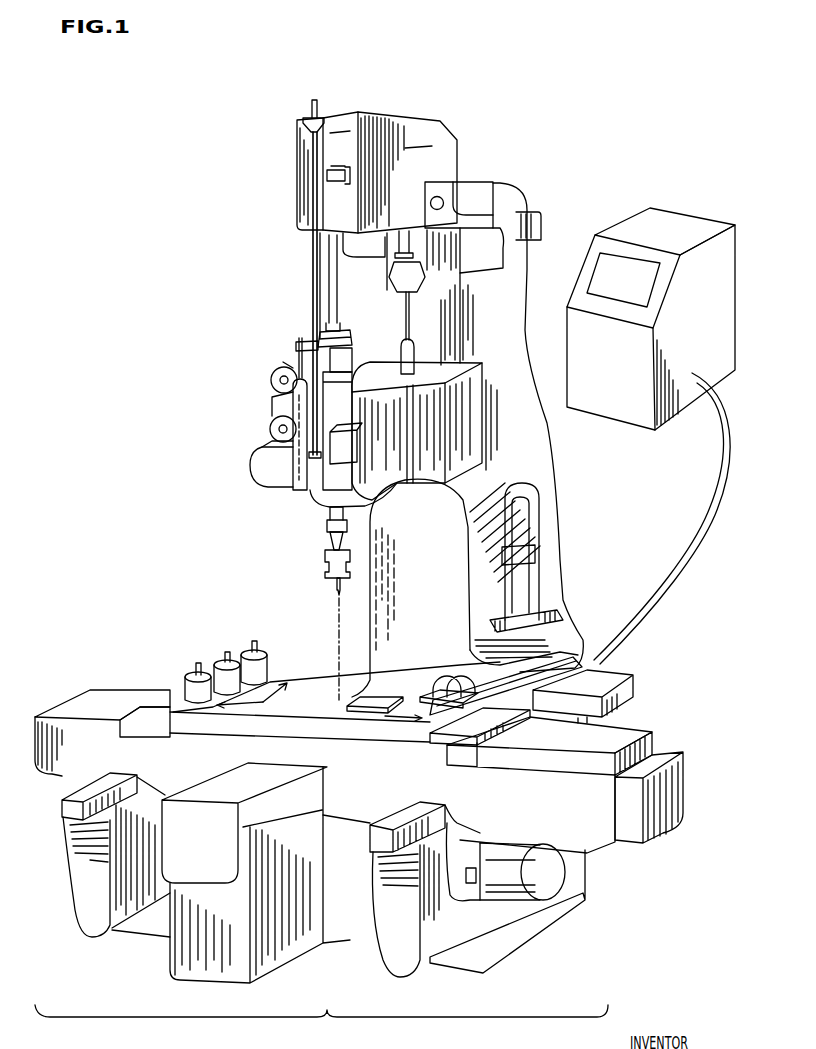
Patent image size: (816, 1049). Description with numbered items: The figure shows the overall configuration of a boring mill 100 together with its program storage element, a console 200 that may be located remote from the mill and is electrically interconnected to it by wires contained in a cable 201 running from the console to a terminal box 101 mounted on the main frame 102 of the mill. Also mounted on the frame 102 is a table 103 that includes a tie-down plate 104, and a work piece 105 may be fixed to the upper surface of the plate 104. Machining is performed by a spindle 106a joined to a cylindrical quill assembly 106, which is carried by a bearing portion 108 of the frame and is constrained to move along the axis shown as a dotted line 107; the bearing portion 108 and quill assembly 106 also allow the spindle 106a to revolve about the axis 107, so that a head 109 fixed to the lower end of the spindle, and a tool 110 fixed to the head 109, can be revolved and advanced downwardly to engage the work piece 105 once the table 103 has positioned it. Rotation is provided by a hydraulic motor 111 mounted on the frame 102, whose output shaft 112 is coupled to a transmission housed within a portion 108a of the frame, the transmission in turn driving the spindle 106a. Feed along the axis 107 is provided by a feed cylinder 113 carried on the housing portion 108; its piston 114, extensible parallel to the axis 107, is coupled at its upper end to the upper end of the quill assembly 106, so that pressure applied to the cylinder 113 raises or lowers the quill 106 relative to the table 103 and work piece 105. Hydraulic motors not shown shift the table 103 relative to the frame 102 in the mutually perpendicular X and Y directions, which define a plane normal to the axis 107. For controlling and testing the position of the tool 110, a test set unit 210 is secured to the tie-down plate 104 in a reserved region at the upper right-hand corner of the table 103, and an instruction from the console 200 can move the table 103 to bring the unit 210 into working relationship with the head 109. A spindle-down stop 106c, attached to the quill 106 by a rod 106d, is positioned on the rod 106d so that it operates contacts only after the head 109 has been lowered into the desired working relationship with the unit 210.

The boring mill 100 is at (321, 1025).
The terminal box 101 is at (632, 682).
The main frame 102 is at (507, 345).
The table 103 is at (398, 786).
The tie-down plate 104 is at (307, 685).
The work piece 105 is at (388, 700).
The quill assembly 106 is at (330, 514).
The spindle 106a is at (313, 273).
The spindle-down stop 106c is at (309, 119).
The rod 106d is at (317, 305).
The axis 107 is at (336, 601).
The bearing portion 108 is at (427, 490).
The portion of frame housing the transmission 108a is at (407, 135).
The head 109 is at (325, 558).
The tool 110 is at (336, 583).
The hydraulic motor 111 is at (388, 293).
The output shaft 112 is at (398, 248).
The feed cylinder 113 is at (272, 403).
The piston 114 is at (297, 349).
The console 200 is at (704, 329).
The cable 201 is at (718, 494).
The test set unit 210 is at (467, 680).